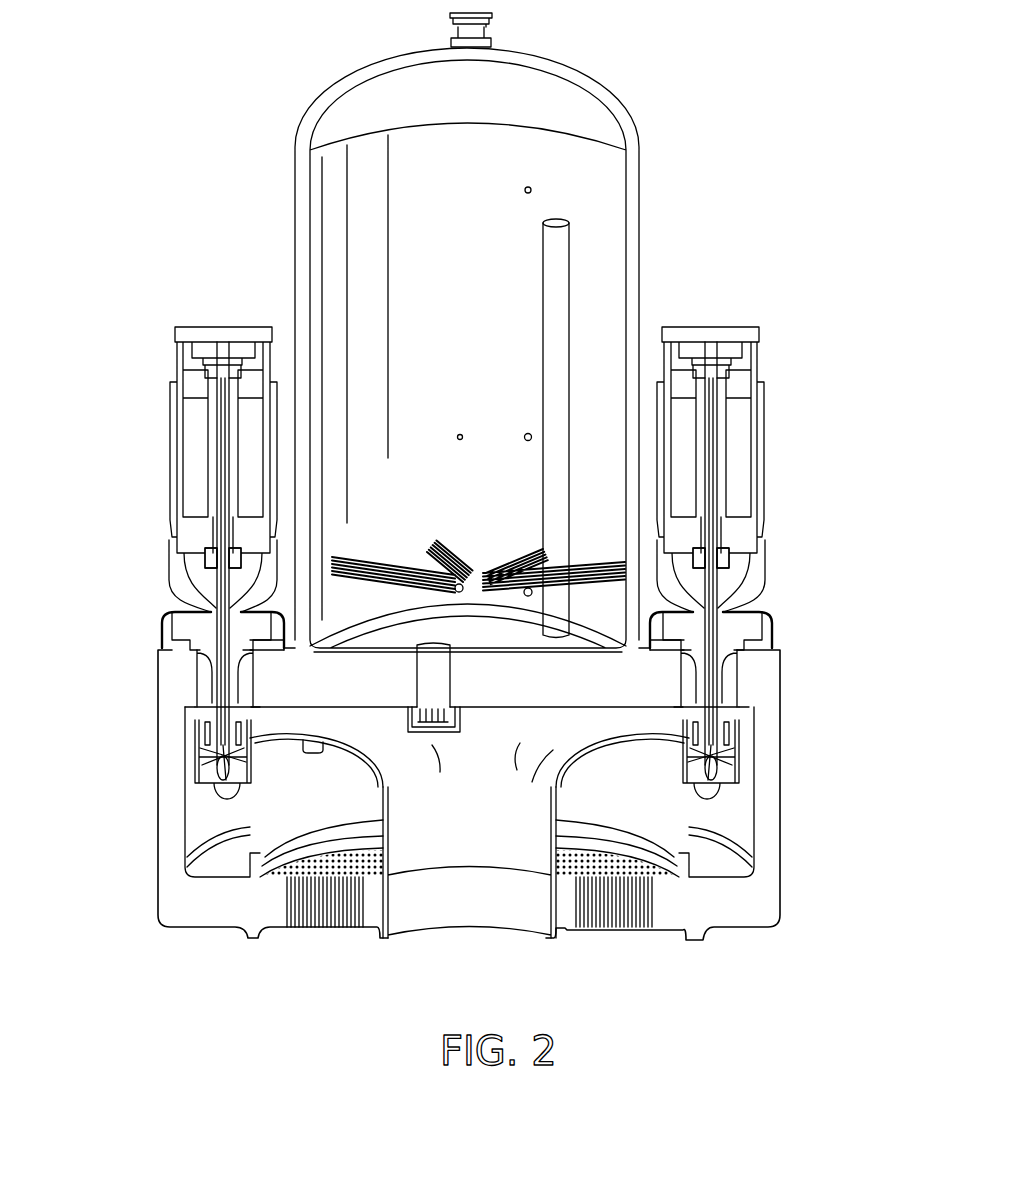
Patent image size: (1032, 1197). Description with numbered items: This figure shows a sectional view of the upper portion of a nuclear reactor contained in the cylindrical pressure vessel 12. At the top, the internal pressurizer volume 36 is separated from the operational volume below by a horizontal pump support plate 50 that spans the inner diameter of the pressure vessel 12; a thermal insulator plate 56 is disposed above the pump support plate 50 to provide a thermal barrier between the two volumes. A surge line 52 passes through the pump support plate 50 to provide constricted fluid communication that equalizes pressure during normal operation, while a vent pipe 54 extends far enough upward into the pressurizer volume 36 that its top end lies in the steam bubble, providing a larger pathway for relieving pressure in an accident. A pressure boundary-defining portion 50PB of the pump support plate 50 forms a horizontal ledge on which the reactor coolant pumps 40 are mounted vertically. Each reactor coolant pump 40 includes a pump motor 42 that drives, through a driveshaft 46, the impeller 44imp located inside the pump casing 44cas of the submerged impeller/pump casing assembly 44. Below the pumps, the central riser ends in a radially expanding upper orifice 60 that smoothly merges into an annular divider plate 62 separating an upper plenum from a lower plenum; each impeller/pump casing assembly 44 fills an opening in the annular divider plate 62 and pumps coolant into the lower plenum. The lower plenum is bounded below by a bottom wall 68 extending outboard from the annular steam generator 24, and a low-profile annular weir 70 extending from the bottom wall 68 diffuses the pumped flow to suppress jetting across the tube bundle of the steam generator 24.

The cylindrical pressure vessel 12 is at (783, 885).
The annular steam generator 24 is at (348, 898).
The pressurizer volume 36 is at (506, 403).
The reactor coolant pump 40 is at (186, 620).
The pump motor 42 is at (176, 447).
The impeller/pump casing assembly 44 is at (197, 741).
The pump casing 44cas is at (836, 768).
The impeller 44imp is at (834, 833).
The driveshaft 46 is at (232, 675).
The pump support plate 50 is at (558, 692).
The pressure boundary-defining portion of the pump support plate 50PB is at (821, 527).
The surge line 52 is at (442, 684).
The vent pipe 54 is at (568, 263).
The thermal insulator plate 56 is at (410, 643).
The radially expanding upper orifice 60 is at (392, 745).
The annular divider plate 62 is at (272, 733).
The bottom wall 68 is at (722, 860).
The annular weir 70 is at (567, 815).